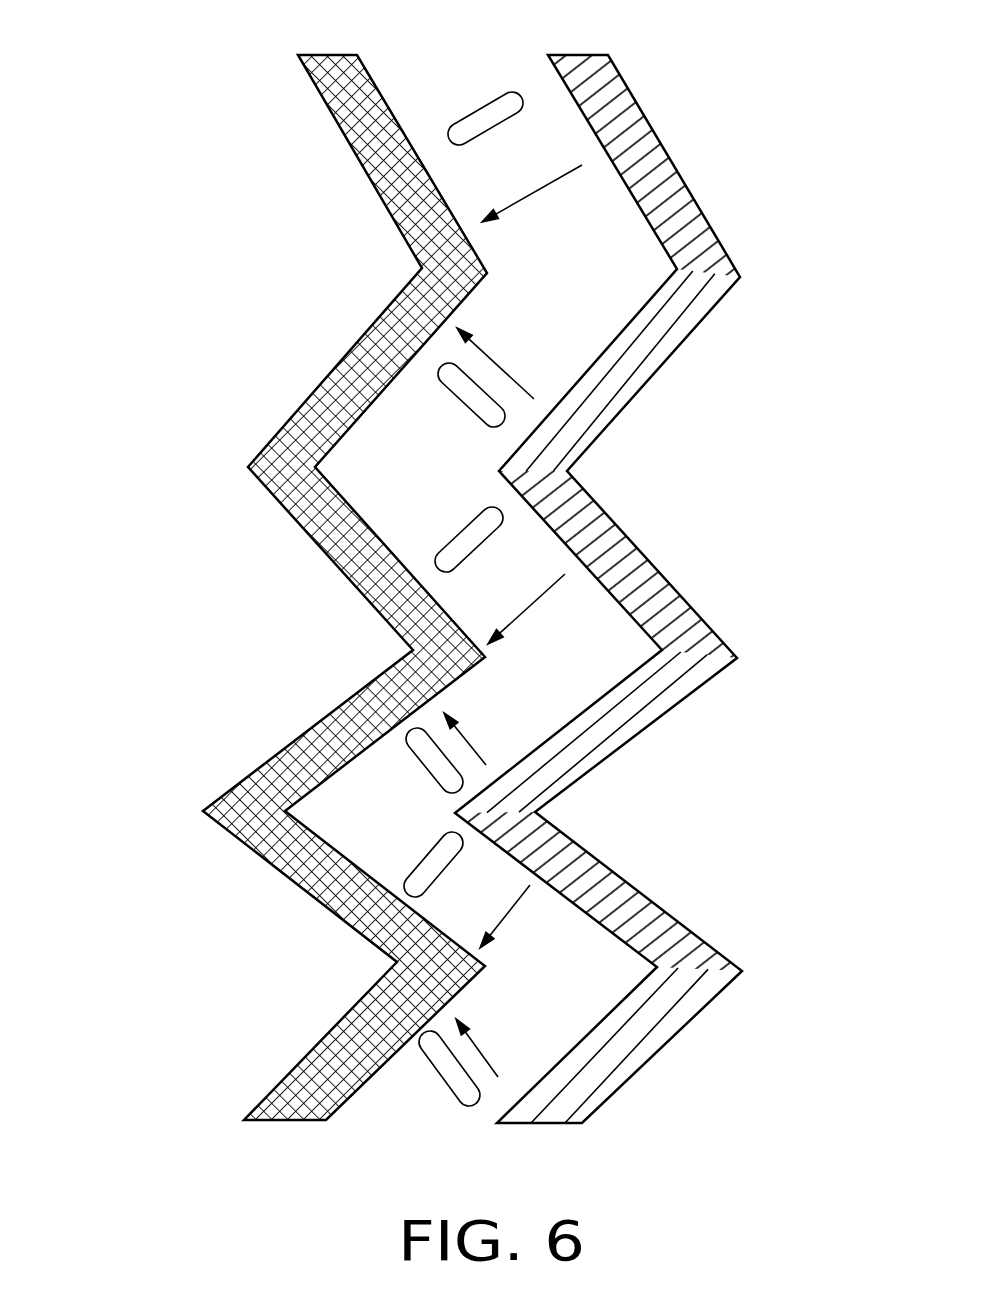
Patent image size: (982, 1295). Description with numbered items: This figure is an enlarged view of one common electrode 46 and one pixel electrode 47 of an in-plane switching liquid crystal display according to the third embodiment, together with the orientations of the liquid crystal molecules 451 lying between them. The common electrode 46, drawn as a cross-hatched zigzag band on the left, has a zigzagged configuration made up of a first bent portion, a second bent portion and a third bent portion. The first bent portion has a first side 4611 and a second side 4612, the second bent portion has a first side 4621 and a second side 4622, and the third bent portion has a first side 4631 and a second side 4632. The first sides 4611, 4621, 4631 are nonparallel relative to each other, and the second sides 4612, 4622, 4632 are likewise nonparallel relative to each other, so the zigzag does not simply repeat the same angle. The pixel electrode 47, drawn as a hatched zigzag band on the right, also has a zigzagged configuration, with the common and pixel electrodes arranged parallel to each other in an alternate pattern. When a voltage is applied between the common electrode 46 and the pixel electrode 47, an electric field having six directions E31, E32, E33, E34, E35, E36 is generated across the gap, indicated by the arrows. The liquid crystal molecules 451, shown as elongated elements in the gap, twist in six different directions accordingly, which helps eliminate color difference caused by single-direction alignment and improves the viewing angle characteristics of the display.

The common electrode 46 is at (267, 587).
The first side of the first bent portion 4611 is at (358, 158).
The second side of the first bent portion 4612 is at (357, 358).
The first side of the second bent portion 4621 is at (357, 571).
The second side of the second bent portion 4622 is at (305, 737).
The first side of the third bent portion 4631 is at (349, 908).
The second side of the third bent portion 4632 is at (309, 1041).
The liquid crystal molecules 451 is at (483, 117).
The pixel electrode 47 is at (668, 197).
The first electric field direction E31 is at (532, 184).
The second electric field direction E32 is at (510, 363).
The third electric field direction E33 is at (516, 605).
The fourth electric field direction E34 is at (487, 735).
The fifth electric field direction E35 is at (490, 913).
The sixth electric field direction E36 is at (499, 1044).